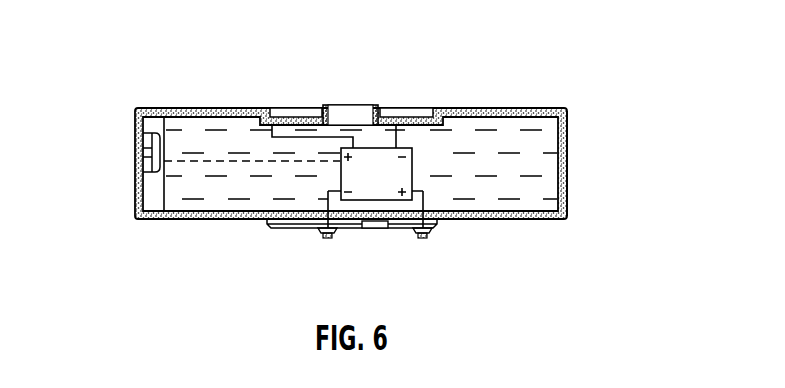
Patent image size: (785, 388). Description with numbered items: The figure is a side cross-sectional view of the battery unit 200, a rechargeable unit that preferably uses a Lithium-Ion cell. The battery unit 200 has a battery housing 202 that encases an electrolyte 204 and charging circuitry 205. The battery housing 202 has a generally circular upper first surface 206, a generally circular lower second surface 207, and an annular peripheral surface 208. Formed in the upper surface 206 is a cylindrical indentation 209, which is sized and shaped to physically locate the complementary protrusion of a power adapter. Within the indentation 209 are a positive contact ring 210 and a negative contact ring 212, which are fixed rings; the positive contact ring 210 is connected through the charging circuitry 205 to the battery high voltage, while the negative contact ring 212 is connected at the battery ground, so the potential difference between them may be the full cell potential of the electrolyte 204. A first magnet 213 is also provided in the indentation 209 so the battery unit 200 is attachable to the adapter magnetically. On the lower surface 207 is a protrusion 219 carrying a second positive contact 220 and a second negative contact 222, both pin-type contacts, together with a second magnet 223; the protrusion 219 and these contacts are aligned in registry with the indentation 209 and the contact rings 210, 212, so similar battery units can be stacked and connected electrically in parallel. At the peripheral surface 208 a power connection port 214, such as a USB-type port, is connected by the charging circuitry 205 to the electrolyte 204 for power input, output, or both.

The battery unit 200 is at (131, 57).
The battery housing 202 is at (567, 109).
The electrolyte 204 is at (545, 165).
The charging circuitry 205 is at (345, 174).
The upper first surface 206 is at (503, 108).
The lower second surface 207 is at (552, 220).
The annular peripheral surface 208 is at (567, 167).
The indentation 209 is at (414, 93).
The positive contact ring 210 is at (394, 107).
The negative contact ring 212 is at (276, 108).
The first magnet 213 is at (352, 104).
The power connection port 214 is at (144, 154).
The protrusion 219 is at (437, 224).
The second positive contact 220 is at (328, 238).
The second negative contact 222 is at (423, 238).
The second magnet 223 is at (373, 230).